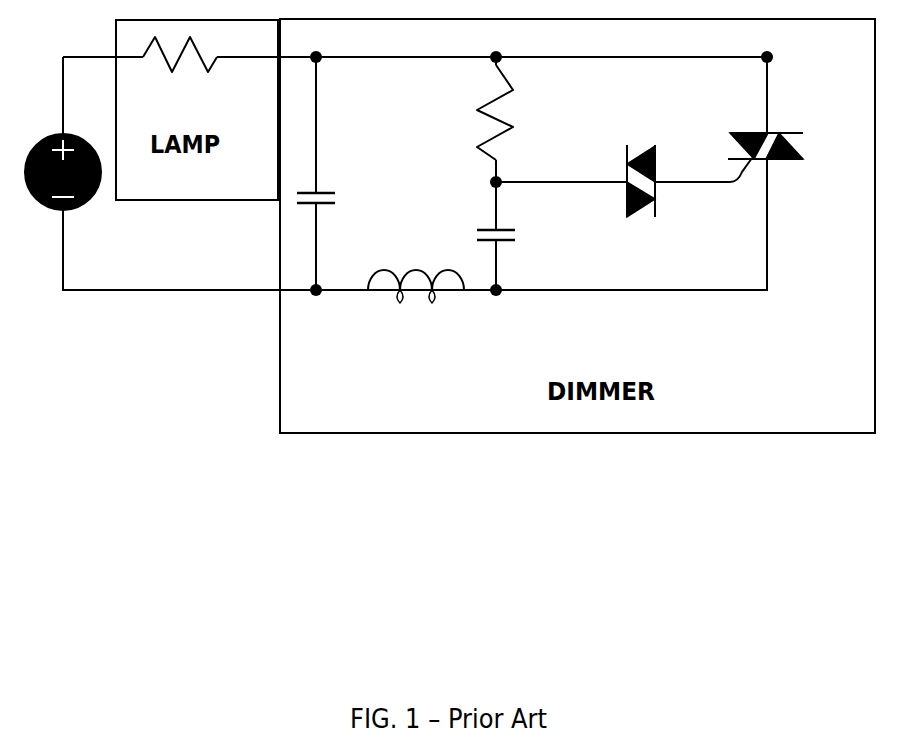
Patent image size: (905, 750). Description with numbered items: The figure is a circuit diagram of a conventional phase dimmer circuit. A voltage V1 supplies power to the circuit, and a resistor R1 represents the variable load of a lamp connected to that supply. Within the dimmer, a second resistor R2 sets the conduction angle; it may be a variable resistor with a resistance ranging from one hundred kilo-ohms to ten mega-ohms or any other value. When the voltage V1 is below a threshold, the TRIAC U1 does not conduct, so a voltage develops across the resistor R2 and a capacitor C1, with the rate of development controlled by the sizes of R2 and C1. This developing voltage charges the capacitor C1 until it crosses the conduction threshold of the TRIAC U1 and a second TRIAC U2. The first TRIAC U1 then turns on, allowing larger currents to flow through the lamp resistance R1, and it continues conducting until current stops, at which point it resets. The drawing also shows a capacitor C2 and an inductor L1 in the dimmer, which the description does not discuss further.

The voltage V1 is at (59, 158).
The resistor R1 is at (191, 67).
The second resistor R2 is at (538, 112).
The capacitor C1 is at (525, 235).
The filter capacitor (0.1 μF) C2 is at (355, 189).
The filter inductor (50 μH) L1 is at (416, 292).
The TRIAC U1 is at (788, 152).
The second TRIAC U2 is at (640, 180).